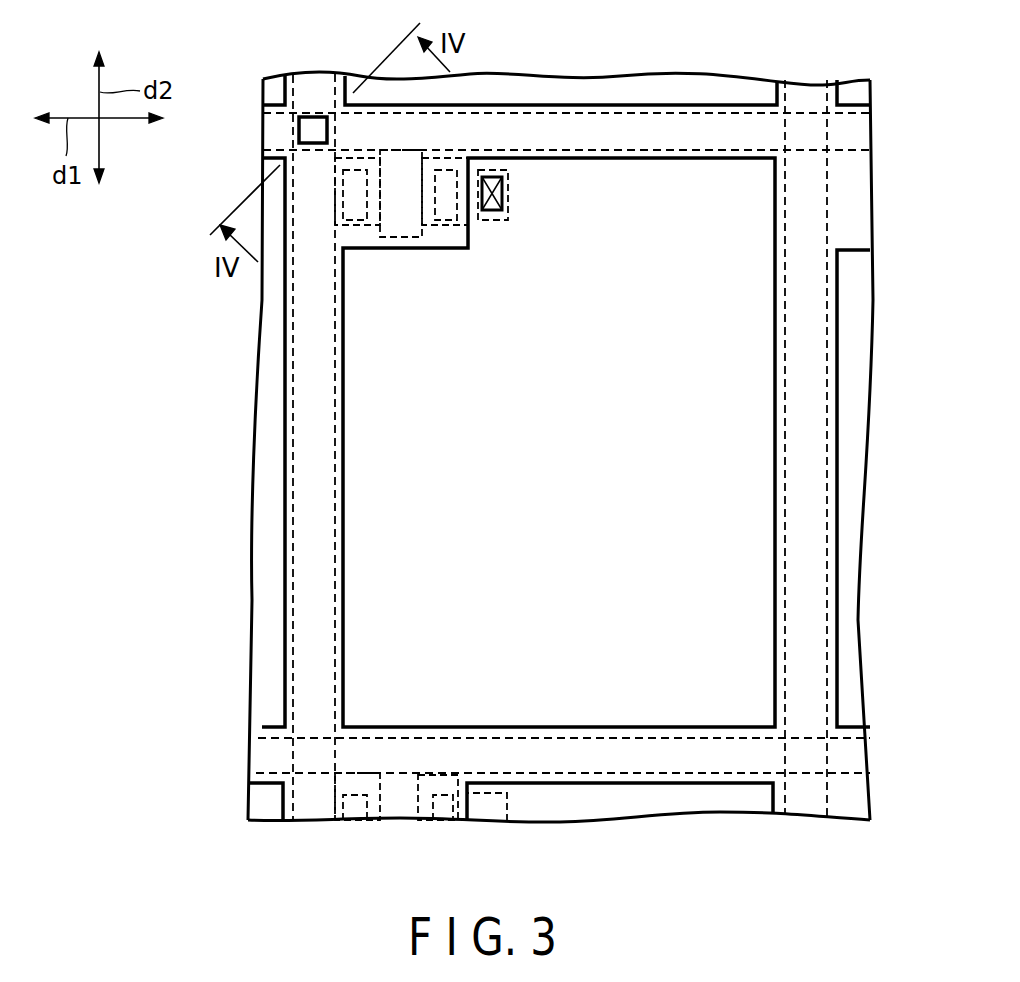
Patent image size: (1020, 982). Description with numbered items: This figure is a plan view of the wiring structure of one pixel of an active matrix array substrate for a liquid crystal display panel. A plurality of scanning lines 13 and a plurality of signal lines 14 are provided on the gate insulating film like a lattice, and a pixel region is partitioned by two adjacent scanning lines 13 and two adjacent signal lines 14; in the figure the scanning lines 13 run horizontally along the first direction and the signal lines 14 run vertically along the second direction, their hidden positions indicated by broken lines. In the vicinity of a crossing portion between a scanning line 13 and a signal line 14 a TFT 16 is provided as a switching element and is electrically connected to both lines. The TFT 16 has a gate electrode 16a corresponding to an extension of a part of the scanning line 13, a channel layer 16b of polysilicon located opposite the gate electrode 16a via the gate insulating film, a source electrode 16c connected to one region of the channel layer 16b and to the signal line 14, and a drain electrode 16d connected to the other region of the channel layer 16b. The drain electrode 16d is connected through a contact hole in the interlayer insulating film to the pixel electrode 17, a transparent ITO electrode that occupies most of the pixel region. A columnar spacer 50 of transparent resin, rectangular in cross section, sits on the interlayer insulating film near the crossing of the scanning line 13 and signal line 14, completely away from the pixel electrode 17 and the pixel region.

The scanning line 13 is at (555, 108).
The signal line 14 is at (290, 325).
The TFT 16 is at (466, 485).
The gate electrode 16a is at (413, 238).
The channel layer 16b is at (440, 228).
The source electrode 16c is at (373, 210).
The drain electrode 16d is at (508, 195).
The pixel electrode 17 is at (755, 500).
The columnar spacer 50 is at (309, 117).